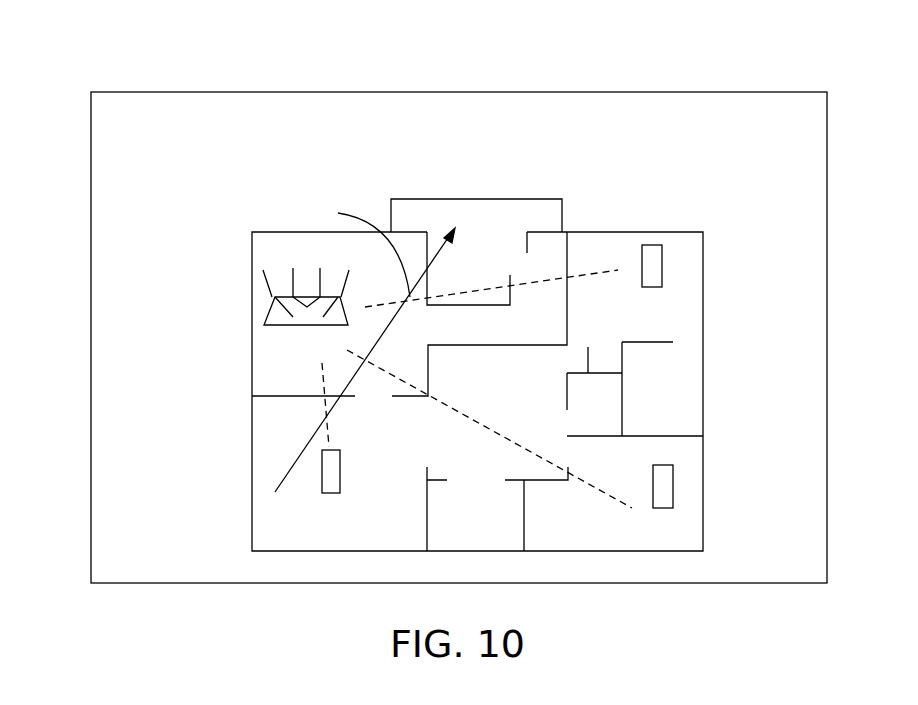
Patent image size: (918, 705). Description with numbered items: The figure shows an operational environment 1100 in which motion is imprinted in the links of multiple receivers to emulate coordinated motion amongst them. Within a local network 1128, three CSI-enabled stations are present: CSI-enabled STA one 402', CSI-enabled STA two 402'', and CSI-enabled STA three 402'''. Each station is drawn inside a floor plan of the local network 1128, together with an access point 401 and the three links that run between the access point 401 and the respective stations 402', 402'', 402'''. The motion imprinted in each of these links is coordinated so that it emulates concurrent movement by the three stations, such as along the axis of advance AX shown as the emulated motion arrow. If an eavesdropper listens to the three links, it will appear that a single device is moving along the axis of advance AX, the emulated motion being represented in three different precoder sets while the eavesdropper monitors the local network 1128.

The operational environment 1100 is at (120, 55).
The local network 1128 is at (212, 158).
The access point (AP) 401 is at (262, 318).
The CSI-enabled STA1 402' is at (305, 546).
The CSI-enabled STA2 402'' is at (723, 502).
The CSI-enabled STA3 402''' is at (714, 283).